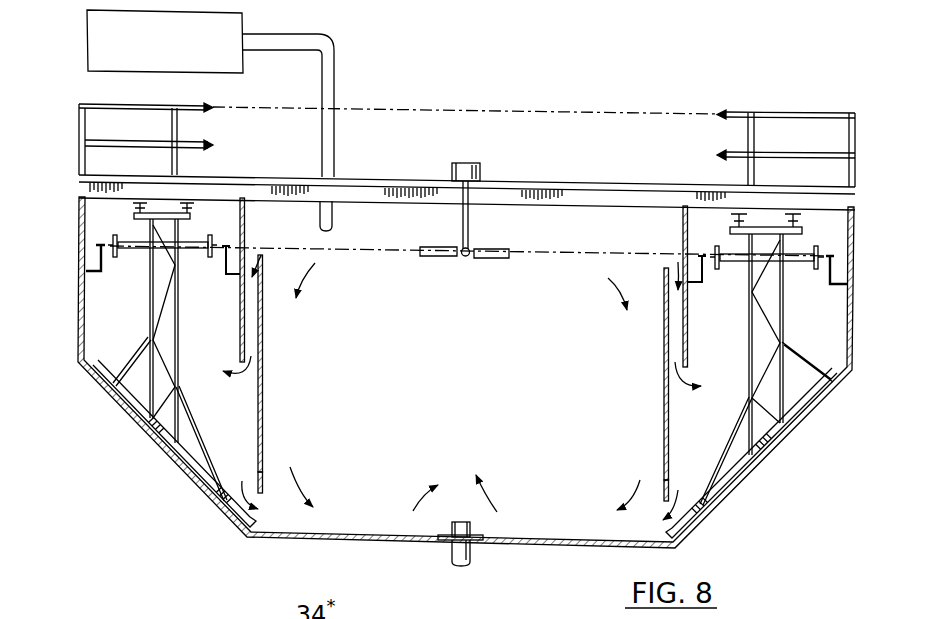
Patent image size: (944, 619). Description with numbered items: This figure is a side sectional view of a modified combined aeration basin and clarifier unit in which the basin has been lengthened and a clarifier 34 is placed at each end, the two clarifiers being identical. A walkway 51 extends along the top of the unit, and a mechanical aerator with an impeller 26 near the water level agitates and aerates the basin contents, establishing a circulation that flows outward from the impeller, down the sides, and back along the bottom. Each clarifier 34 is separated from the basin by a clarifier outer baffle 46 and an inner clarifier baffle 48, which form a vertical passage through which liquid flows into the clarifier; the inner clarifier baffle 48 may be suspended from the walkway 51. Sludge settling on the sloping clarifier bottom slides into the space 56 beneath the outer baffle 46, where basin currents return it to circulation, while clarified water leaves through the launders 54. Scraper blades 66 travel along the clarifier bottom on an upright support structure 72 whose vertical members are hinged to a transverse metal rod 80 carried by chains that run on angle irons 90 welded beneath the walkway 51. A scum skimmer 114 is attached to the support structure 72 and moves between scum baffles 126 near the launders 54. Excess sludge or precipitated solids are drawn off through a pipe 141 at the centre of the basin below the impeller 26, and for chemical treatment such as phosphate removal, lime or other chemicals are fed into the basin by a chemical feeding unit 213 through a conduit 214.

The chemical feeding unit 213 is at (244, 22).
The conduit 214 is at (336, 73).
The walkway 51 is at (585, 187).
The impeller 26 is at (493, 250).
The transverse metal rod 80 is at (159, 213).
The angle iron 90 is at (188, 215).
The scum skimmer 114 is at (802, 247).
The support structure 72 is at (179, 360).
The scraper blades 66 is at (113, 372).
The clarifier 34 is at (133, 439).
The launders 54 is at (92, 252).
The scum baffles 126 is at (211, 243).
The inner clarifier baffle 48 is at (240, 305).
The clarifier outer baffle 46 is at (264, 335).
The space 56 is at (260, 497).
The pipe 141 is at (470, 552).